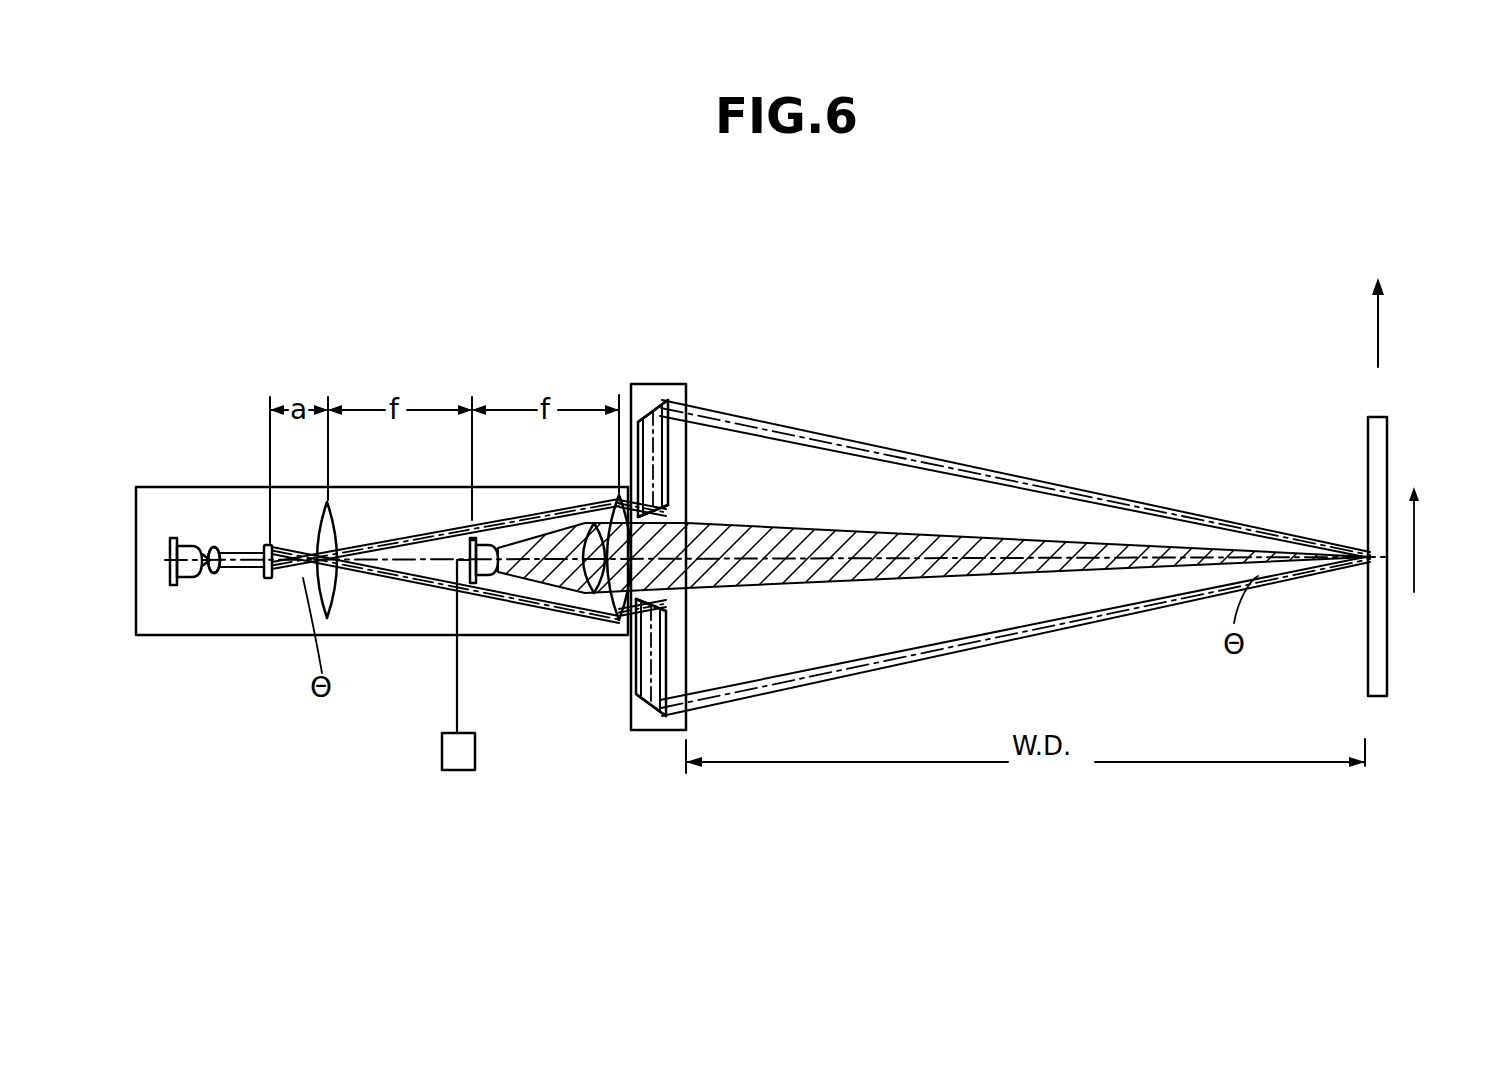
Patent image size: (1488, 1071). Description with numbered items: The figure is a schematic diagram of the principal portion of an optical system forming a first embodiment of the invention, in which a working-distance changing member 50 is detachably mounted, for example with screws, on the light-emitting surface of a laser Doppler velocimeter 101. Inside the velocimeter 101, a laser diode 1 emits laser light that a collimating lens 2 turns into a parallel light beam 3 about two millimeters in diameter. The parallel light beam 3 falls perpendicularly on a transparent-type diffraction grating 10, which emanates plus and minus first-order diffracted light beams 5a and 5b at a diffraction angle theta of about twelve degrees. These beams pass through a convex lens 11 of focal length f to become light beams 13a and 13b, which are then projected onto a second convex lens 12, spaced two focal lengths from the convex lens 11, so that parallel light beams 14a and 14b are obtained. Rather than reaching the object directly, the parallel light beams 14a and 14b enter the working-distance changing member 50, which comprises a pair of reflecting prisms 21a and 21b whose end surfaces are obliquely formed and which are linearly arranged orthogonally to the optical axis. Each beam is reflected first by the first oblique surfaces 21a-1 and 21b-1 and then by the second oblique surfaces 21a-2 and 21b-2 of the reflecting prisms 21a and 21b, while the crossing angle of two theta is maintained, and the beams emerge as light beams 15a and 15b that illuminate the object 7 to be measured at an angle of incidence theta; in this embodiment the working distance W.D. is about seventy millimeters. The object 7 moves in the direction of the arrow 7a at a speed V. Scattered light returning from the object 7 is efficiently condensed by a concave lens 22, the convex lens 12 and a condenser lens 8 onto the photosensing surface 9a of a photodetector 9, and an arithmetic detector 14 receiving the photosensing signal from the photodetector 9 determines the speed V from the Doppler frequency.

The laser Doppler velocimeter 101 is at (165, 487).
The laser diode 1 is at (185, 577).
The collimating lens 2 is at (215, 547).
The parallel light beam 3 is at (222, 570).
The diffracted light beam 5a is at (300, 552).
The diffracted light beam 5b is at (293, 578).
The diffraction grating 10 is at (266, 579).
The convex lens 11 is at (338, 615).
The light beam 13a is at (372, 542).
The light beam 13b is at (383, 578).
The photodetector 9 is at (487, 583).
The photosensing surface 9a is at (486, 538).
The condenser lens 8 is at (585, 585).
The convex lens 12 is at (610, 600).
The arithmetic detector 14 is at (458, 772).
The parallel light beam 14a is at (616, 492).
The parallel light beam 14b is at (616, 628).
The working-distance changing member 50 is at (678, 387).
The reflecting prism 21a is at (677, 427).
The first oblique surface 21a-1 is at (672, 512).
The second oblique surface 21a-2 is at (652, 405).
The reflecting prism 21b is at (670, 677).
The first oblique surface 21b-1 is at (670, 603).
The second oblique surface 21b-2 is at (648, 733).
The concave lens 22 is at (700, 523).
The light beam 15a is at (975, 466).
The light beam 15b is at (883, 668).
The object to be measured 7 is at (1385, 685).
The arrow 7a is at (1414, 592).